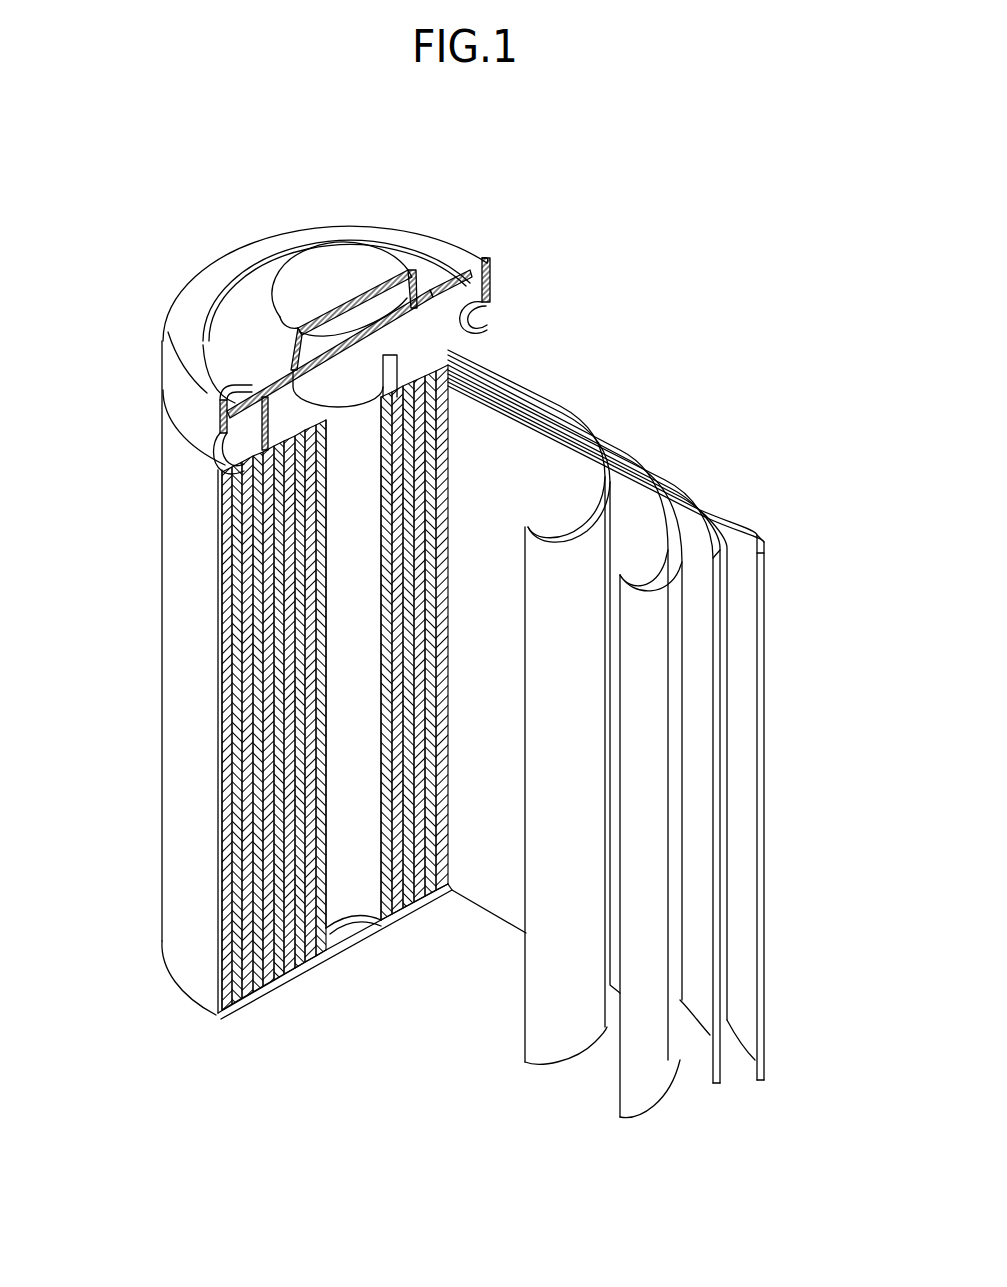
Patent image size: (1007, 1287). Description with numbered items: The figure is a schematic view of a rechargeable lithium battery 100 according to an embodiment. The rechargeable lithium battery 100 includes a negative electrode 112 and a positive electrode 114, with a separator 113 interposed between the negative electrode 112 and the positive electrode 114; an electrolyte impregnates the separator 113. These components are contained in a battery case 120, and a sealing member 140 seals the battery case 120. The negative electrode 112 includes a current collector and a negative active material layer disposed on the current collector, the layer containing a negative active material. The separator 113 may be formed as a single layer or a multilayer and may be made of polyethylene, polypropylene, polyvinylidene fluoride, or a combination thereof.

The rechargeable lithium battery 100 is at (546, 209).
The negative electrode 112 is at (762, 528).
The separator 113 is at (563, 410).
The positive electrode 114 is at (648, 475).
The battery case 120 is at (176, 630).
The sealing member 140 is at (297, 283).